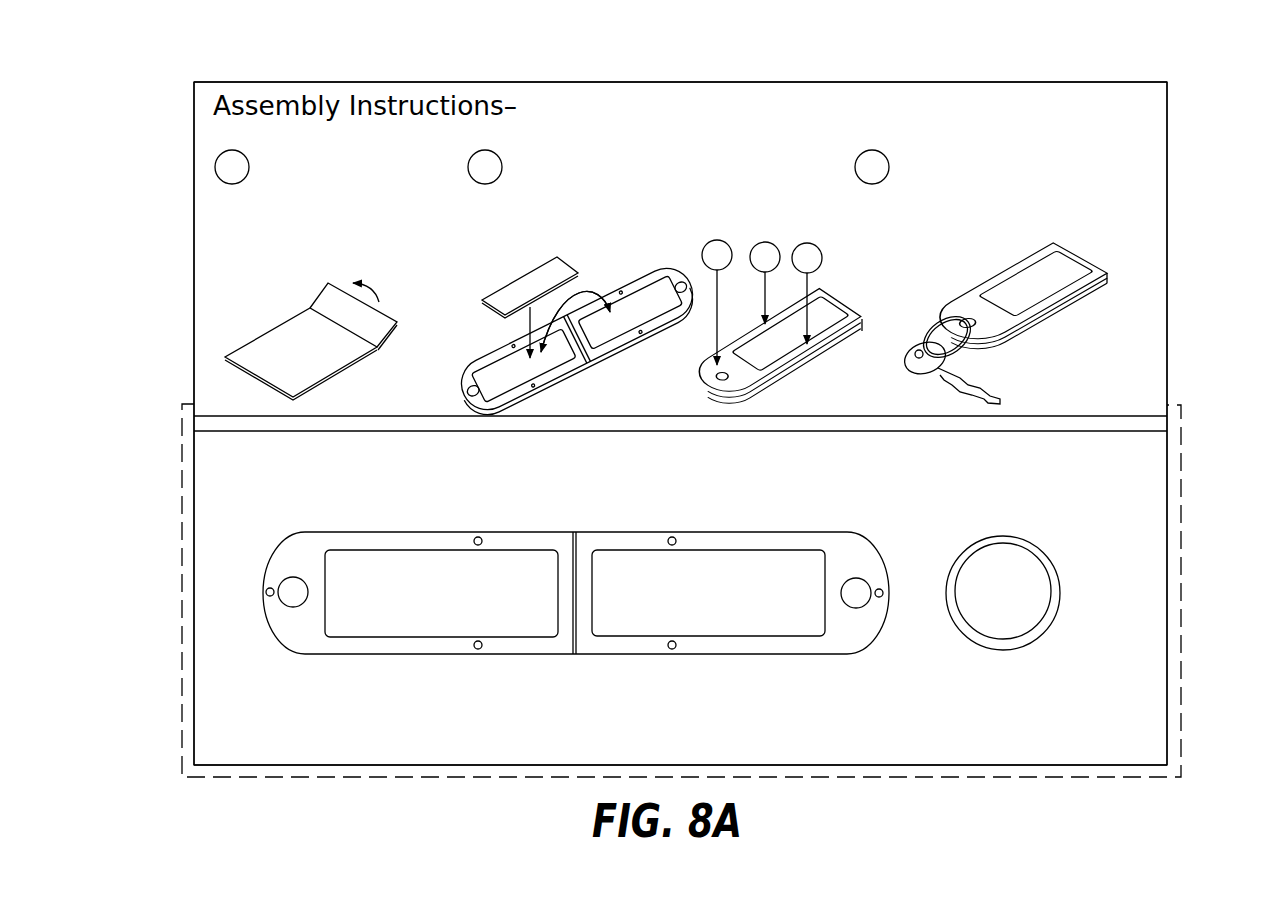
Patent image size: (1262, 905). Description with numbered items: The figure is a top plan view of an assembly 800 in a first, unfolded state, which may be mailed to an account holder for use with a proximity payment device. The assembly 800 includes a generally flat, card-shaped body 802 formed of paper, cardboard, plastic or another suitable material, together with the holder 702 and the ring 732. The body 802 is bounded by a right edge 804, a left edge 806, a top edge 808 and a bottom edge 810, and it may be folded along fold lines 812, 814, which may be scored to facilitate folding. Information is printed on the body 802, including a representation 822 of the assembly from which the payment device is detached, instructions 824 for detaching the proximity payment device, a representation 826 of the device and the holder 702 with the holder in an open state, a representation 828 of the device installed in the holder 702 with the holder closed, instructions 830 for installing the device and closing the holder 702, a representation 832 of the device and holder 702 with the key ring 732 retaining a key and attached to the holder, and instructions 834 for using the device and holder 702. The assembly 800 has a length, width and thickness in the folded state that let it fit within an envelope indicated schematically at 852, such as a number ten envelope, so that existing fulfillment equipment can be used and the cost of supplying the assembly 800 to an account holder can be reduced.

The assembly 800 is at (1082, 56).
The body 802 is at (795, 97).
The right edge 804 is at (1167, 225).
The left edge 806 is at (194, 312).
The top edge 808 is at (612, 82).
The bottom edge 810 is at (840, 765).
The fold line 812 is at (1147, 413).
The fold line 814 is at (1143, 432).
The representation of the assembly 822 is at (274, 305).
The instructions for detaching the proximity payment device 824 is at (214, 148).
The representation of the proximity payment device and holder in an open state 826 is at (468, 280).
The representation of the proximity payment device installed in the holder in a clos 828 is at (845, 283).
The instructions for installing the proximity payment device and closing the holder 830 is at (467, 155).
The representation of the proximity payment device and holder with key ring 832 is at (960, 272).
The instructions for using the proximity payment device and holder 834 is at (915, 135).
The envelope 852 is at (1182, 512).
The holder 702 is at (405, 532).
The ring 732 is at (1038, 547).